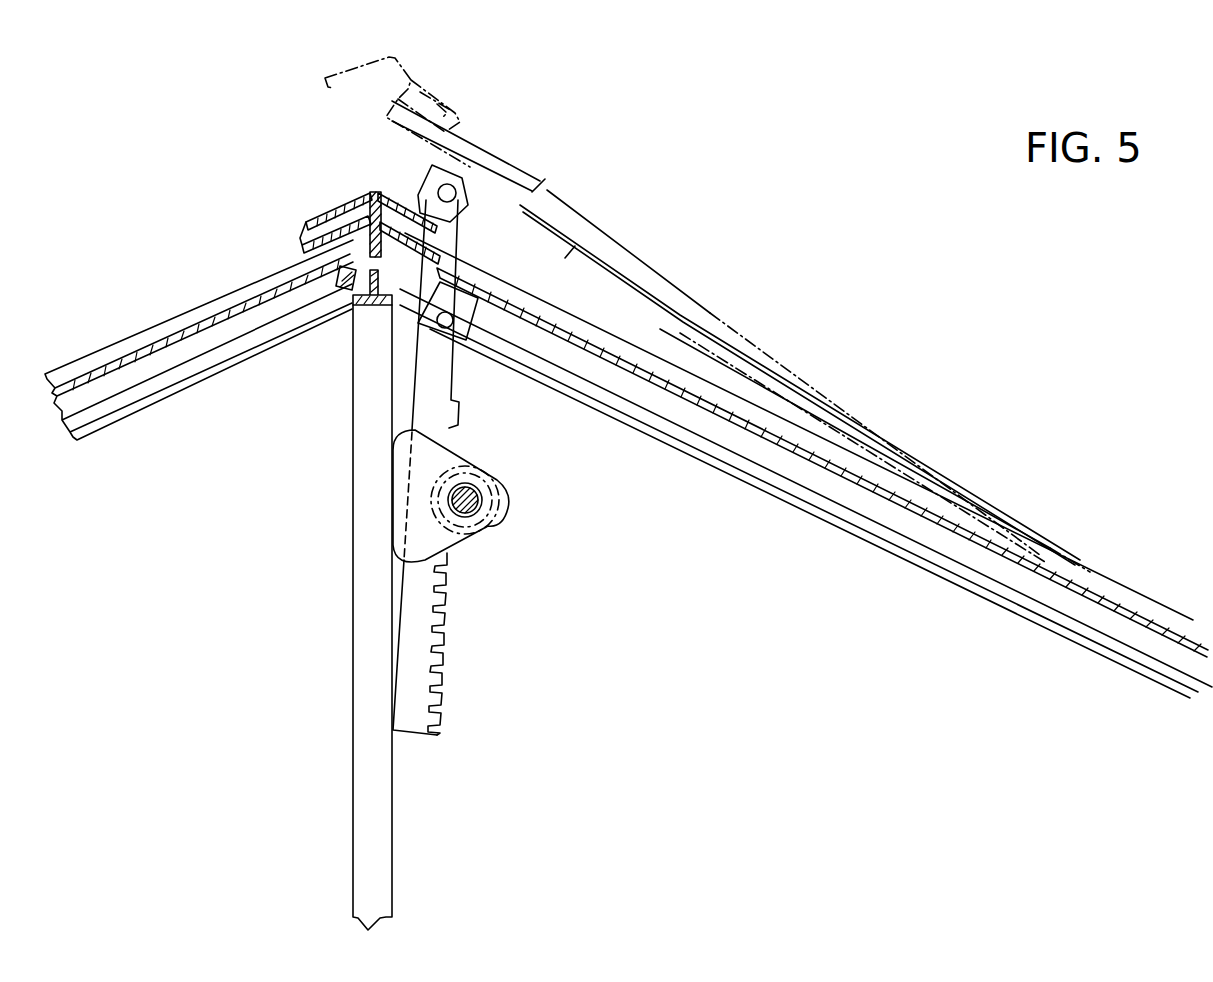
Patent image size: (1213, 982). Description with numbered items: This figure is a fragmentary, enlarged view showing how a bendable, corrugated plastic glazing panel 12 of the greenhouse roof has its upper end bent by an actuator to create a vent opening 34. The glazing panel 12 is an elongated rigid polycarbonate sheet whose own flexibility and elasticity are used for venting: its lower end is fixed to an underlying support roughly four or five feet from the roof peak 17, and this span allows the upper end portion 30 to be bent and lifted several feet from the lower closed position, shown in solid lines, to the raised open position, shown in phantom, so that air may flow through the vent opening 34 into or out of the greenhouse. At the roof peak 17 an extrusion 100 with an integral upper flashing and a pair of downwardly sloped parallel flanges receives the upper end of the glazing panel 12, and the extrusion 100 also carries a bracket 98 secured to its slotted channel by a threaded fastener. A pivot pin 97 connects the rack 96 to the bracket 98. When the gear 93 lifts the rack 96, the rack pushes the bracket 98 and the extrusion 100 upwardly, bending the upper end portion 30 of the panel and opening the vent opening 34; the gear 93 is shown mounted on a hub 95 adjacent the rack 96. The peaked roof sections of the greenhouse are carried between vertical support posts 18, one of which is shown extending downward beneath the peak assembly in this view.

The glazing panel 12 is at (650, 350).
The upper end portion 30 is at (617, 243).
The vent opening 34 is at (403, 163).
The roof peak 17 is at (362, 194).
The extrusion 100 is at (323, 215).
The pivot pin 97 is at (449, 185).
The bracket 98 is at (642, 164).
The rack 96 is at (457, 415).
The gear 93 is at (495, 492).
The bolt 95 is at (468, 512).
The vertical support post 18 is at (382, 848).